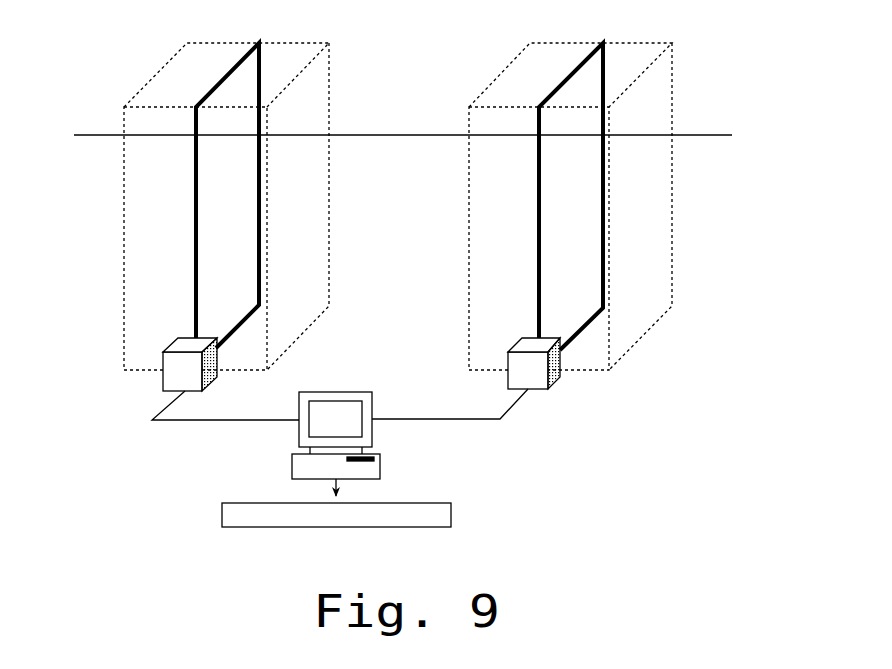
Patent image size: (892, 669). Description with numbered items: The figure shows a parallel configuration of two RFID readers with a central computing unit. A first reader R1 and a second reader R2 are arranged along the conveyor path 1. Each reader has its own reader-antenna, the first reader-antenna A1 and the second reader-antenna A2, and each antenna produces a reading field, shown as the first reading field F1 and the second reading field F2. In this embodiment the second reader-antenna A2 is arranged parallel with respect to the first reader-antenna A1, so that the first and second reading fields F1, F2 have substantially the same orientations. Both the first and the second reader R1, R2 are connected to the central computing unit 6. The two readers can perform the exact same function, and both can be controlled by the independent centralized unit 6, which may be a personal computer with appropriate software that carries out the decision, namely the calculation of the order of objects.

The conveying path 1 is at (717, 135).
The first antenna A1 is at (243, 55).
The second antenna A2 is at (586, 55).
The first communication field F1 is at (315, 239).
The second communication field F2 is at (661, 238).
The first reader R1 is at (143, 393).
The second reader R2 is at (570, 392).
The central computing unit 6 is at (379, 469).